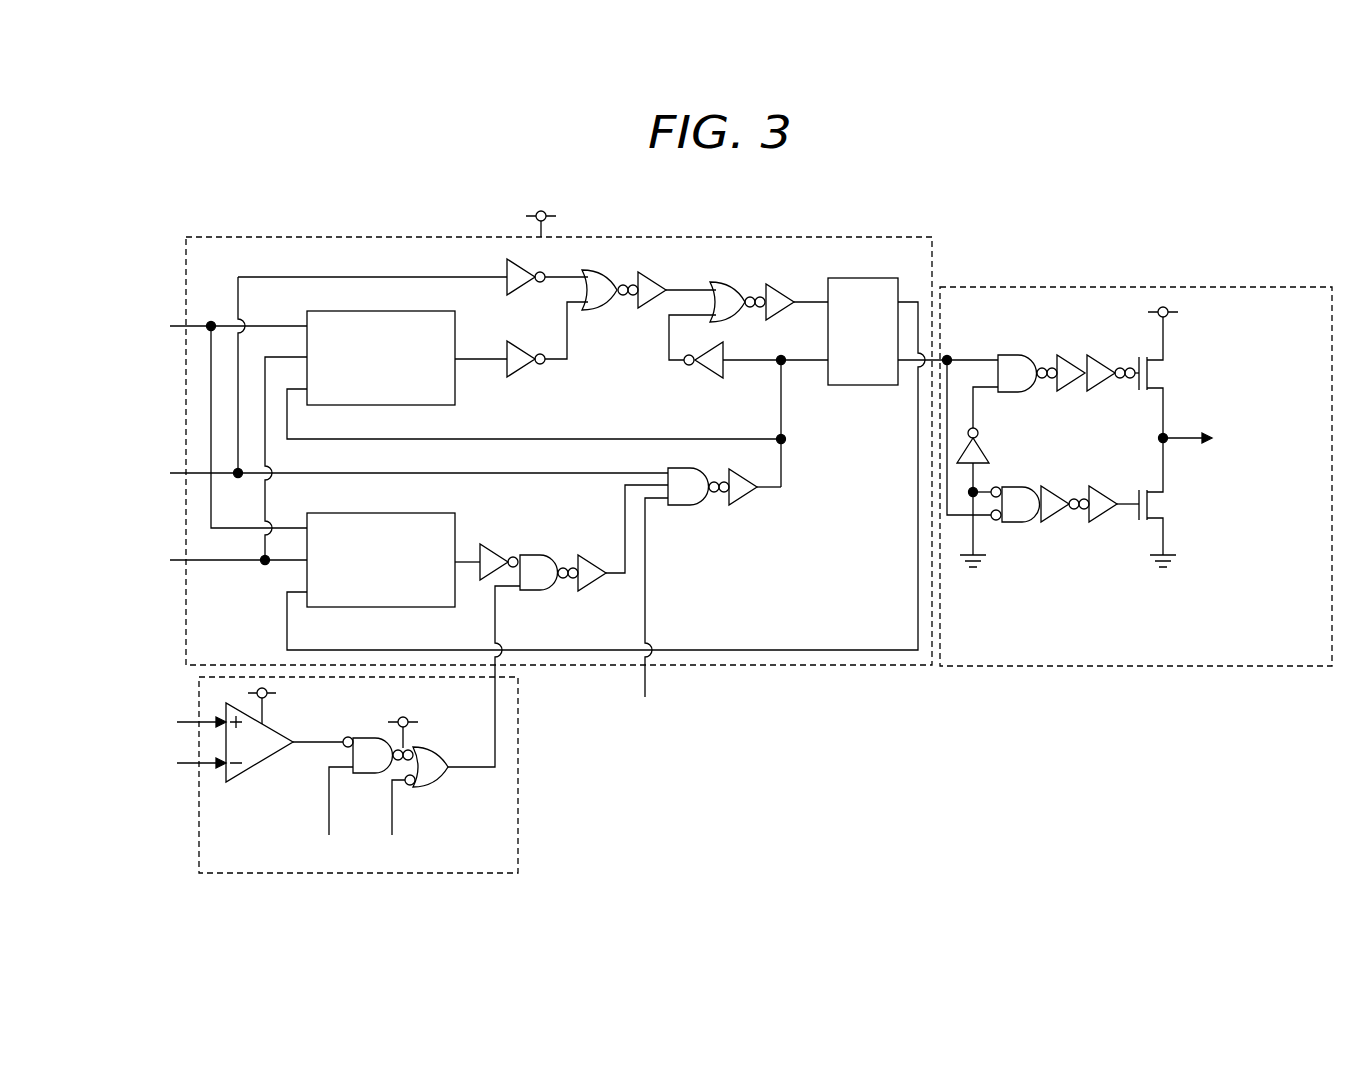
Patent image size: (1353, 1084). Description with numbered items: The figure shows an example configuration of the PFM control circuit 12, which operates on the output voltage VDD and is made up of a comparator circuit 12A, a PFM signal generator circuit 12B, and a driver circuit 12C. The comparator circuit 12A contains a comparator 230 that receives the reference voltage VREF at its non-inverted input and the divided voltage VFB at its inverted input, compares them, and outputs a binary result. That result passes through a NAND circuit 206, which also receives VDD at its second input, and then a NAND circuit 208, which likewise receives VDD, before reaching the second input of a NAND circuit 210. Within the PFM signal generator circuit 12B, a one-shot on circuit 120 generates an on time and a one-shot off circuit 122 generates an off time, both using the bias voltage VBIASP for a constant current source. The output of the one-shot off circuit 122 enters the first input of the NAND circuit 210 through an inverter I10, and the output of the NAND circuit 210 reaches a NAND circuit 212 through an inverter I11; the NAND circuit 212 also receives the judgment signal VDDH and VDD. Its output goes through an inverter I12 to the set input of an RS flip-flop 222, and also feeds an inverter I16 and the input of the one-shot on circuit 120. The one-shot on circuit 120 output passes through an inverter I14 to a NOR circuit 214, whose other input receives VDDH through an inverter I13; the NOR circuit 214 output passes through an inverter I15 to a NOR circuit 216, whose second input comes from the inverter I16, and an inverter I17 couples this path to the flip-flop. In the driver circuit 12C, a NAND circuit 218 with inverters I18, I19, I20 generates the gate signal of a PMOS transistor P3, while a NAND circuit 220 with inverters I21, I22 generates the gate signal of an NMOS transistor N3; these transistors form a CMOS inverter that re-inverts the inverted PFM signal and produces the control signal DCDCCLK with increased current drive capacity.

The PFM control circuit 12 is at (880, 198).
The comparator circuit 12A is at (518, 805).
The PFM signal generator circuit 12B is at (377, 237).
The driver circuit 12C is at (1197, 287).
The one-shot on circuit 120 is at (457, 393).
The one-shot off circuit 122 is at (385, 607).
The NAND circuit 206 is at (365, 773).
The NAND circuit 208 is at (425, 787).
The NAND circuit 210 is at (535, 590).
The NAND circuit 212 is at (680, 505).
The NOR circuit 214 is at (597, 310).
The NOR circuit 216 is at (725, 322).
The NAND circuit 218 is at (1013, 353).
The NAND circuit 220 is at (1015, 522).
The RS flip-flop 222 is at (868, 385).
The comparator 230 is at (252, 767).
The inverter I10 is at (492, 545).
The inverter I11 is at (594, 590).
The inverter I12 is at (745, 505).
The inverter I13 is at (520, 290).
The inverter I14 is at (520, 371).
The inverter I15 is at (654, 270).
The inverter I16 is at (689, 378).
The inverter I17 is at (802, 272).
The inverter I18 is at (988, 450).
The inverter I19 is at (1072, 390).
The inverter I20 is at (1103, 355).
The inverter I21 is at (1055, 516).
The inverter I22 is at (1108, 516).
The PMOS transistor P3 is at (1160, 373).
The NMOS transistor N3 is at (1160, 505).